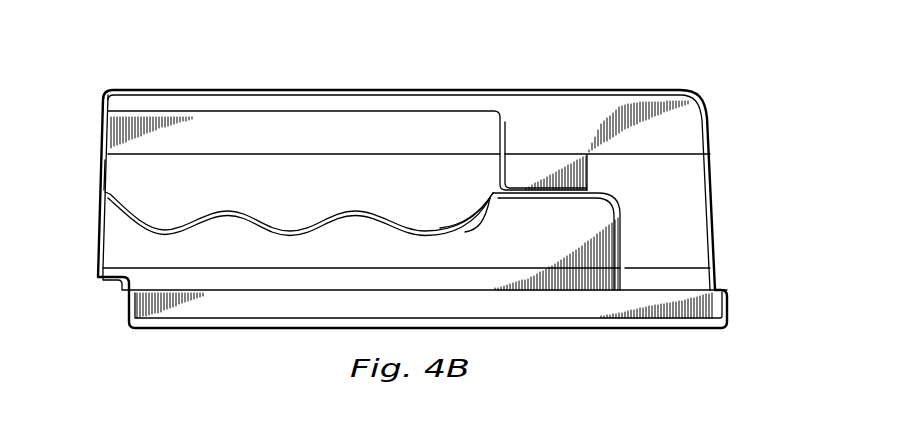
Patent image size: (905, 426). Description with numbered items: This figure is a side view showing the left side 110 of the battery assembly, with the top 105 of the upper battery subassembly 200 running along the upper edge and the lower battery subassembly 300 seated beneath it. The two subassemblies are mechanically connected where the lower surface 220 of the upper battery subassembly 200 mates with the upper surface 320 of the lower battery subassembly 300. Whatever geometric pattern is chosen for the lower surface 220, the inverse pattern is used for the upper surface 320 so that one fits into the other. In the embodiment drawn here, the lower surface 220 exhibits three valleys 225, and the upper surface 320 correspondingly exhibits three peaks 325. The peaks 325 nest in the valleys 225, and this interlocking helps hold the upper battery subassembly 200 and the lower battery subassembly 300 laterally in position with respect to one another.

The top 105 is at (586, 90).
The upper battery subassembly 200 is at (232, 110).
The left side 110 is at (122, 172).
The valleys 225 is at (172, 226).
The peaks 325 is at (158, 233).
The lower surface 220 is at (455, 224).
The upper surface 320 is at (474, 217).
The lower battery subassembly 300 is at (622, 238).